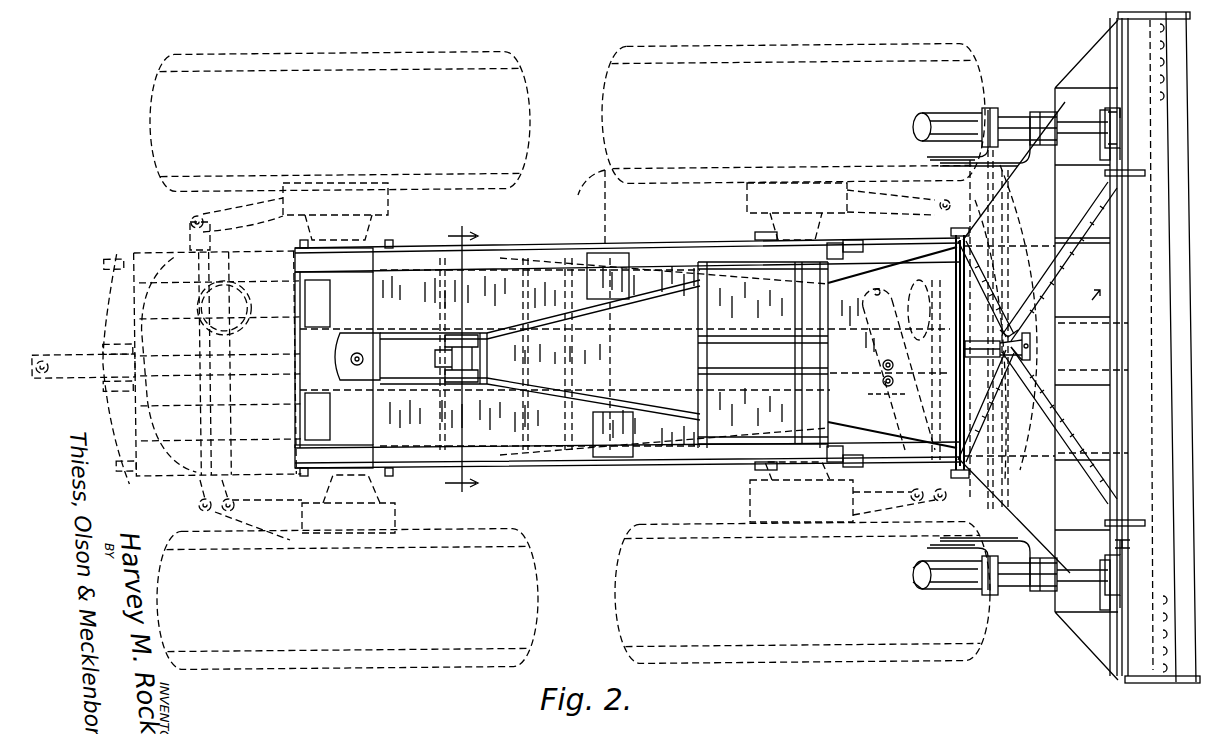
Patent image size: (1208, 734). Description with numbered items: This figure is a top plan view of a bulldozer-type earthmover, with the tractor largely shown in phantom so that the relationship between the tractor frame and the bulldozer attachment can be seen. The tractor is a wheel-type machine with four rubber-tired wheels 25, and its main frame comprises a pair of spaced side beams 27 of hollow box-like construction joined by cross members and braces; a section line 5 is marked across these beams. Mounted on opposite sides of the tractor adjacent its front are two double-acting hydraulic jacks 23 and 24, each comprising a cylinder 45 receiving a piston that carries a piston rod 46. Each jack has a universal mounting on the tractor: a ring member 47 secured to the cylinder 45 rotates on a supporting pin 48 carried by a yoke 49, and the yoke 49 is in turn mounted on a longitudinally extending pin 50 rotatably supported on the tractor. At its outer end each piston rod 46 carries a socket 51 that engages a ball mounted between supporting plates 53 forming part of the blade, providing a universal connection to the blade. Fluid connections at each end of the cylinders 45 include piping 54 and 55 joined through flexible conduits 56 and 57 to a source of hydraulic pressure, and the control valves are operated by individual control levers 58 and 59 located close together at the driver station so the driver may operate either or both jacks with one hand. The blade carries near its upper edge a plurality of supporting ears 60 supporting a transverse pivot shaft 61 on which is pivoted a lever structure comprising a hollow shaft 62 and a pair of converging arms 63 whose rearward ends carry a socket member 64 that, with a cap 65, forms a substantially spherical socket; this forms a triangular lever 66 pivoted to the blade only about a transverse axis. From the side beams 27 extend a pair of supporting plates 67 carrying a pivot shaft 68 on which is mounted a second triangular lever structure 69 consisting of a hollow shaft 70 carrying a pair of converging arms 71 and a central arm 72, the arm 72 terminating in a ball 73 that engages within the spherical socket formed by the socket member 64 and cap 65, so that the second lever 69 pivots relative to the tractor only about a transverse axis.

The section line 5- 5 is at (466, 353).
The hydraulic jack 23 is at (958, 590).
The hydraulic jack 24 is at (950, 106).
The rubber-tired wheels 25 is at (375, 62).
The side beams 27 is at (508, 249).
The cylinder 45 is at (1012, 117).
The piston rod 46 is at (1092, 122).
The ring member 47 is at (988, 108).
The supporting pin 48 is at (1005, 600).
The yoke 49 is at (992, 555).
The longitudinally extending pin 50 is at (1016, 178).
The socket 51 is at (1110, 88).
The supporting plates 53 is at (1105, 148).
The piping 54 is at (1050, 595).
The piping 55 is at (930, 590).
The flexible conduit 56 is at (1030, 115).
The flexible conduit 57 is at (925, 157).
The control lever 58 is at (882, 382).
The control lever 59 is at (882, 365).
The supporting ears 60 is at (1110, 173).
The pivot shaft 61 is at (1130, 546).
The hollow shaft 62 is at (1105, 270).
The converging arms 63 is at (1086, 225).
The socket member 64 is at (1032, 347).
The cap 65 is at (1008, 333).
The triangular lever 66 is at (1088, 300).
The supporting plates 67 is at (898, 246).
The pivot shaft 68 is at (960, 230).
The second triangular lever structure 69 is at (981, 283).
The hollow shaft 70 is at (960, 348).
The converging arms 71 is at (993, 305).
The central arm 72 is at (965, 368).
The ball 73 is at (1042, 405).